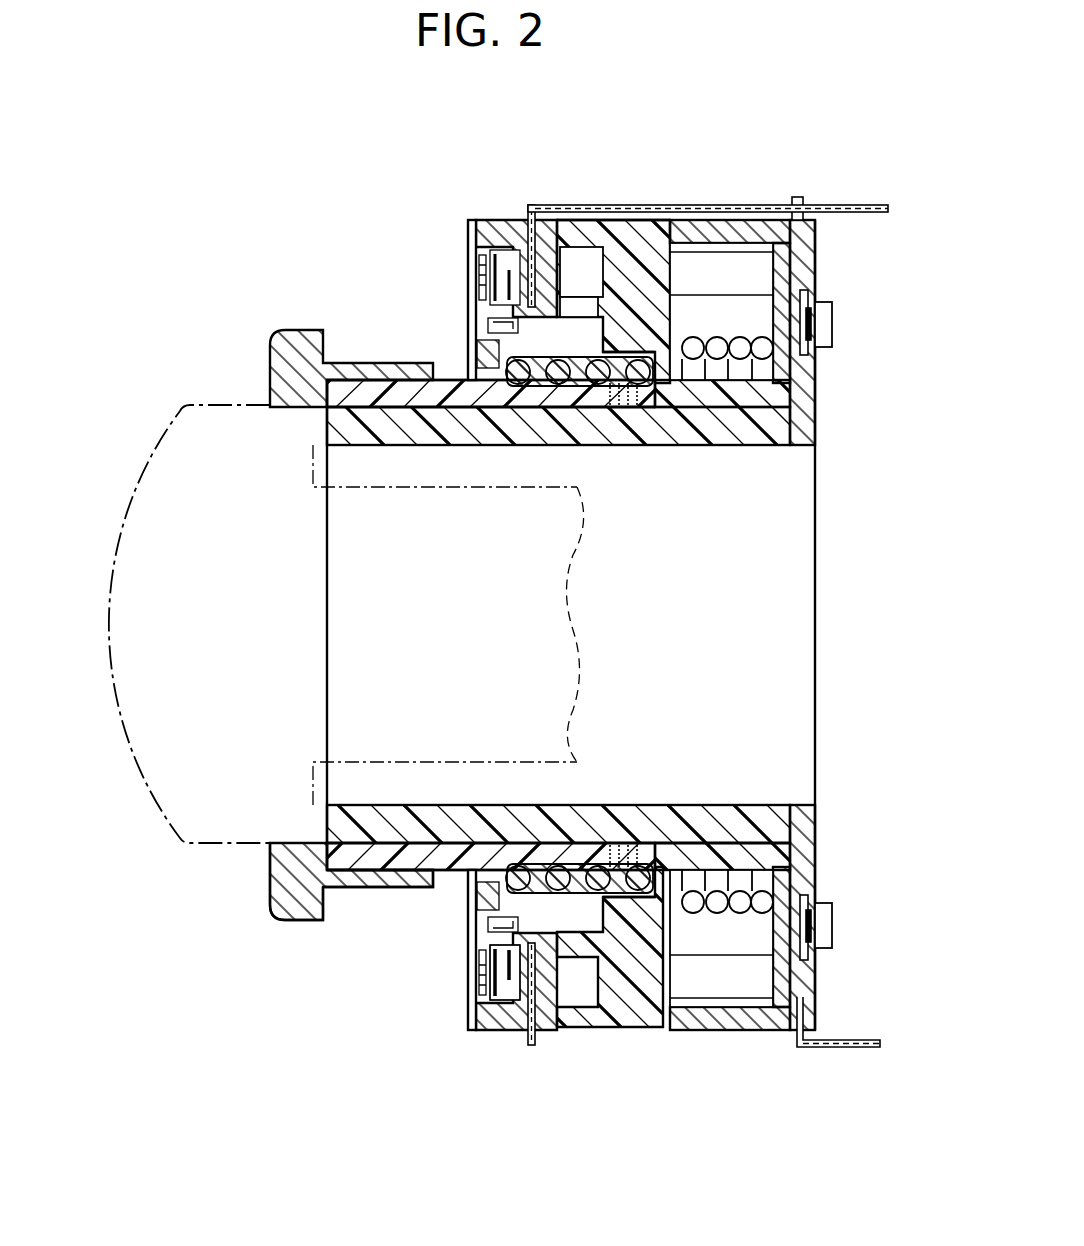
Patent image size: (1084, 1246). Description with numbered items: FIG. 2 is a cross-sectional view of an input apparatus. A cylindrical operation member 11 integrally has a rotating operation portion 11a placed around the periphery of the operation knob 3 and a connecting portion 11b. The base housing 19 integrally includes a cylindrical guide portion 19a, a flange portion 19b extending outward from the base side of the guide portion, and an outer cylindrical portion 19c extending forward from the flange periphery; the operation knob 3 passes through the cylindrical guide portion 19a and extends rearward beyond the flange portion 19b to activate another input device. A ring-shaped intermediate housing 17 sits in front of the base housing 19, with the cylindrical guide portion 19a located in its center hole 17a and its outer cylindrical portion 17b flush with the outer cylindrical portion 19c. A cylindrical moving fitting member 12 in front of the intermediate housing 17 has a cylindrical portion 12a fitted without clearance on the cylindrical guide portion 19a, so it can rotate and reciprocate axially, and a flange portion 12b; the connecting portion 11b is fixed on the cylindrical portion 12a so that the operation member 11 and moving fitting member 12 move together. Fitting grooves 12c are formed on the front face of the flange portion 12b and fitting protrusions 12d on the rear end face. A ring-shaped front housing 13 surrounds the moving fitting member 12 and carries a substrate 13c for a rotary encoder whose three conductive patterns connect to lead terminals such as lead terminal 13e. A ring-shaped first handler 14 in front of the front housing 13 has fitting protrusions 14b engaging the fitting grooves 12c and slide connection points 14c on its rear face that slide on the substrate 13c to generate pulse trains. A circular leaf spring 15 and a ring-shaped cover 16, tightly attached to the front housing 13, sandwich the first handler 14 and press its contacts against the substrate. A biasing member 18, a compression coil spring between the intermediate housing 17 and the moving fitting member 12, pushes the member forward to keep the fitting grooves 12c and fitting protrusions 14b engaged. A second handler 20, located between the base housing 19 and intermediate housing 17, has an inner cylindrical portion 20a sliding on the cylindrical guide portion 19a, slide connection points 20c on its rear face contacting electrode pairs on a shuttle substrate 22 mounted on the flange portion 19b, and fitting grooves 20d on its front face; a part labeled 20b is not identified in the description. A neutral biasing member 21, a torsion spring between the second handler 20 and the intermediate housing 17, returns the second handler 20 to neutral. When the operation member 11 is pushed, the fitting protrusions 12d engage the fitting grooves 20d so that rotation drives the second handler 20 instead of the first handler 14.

The operation knob 3 is at (143, 470).
The operation member 11 is at (292, 930).
The rotating operation portion 11a is at (278, 893).
The connecting portion 11b is at (348, 880).
The moving fitting member 12 is at (424, 852).
The cylindrical portion 12a is at (377, 856).
The flange portion 12b is at (492, 346).
The fitting grooves 12c is at (497, 408).
The fitting protrusions 12d is at (579, 490).
The front housing 13 is at (497, 222).
The substrate 13c is at (531, 300).
The lead terminal 13e is at (573, 207).
The first handler 14 is at (500, 1022).
The fitting protrusions 14b is at (490, 333).
The slide connection points 14c is at (493, 284).
The leaf spring 15 is at (480, 263).
The cover 16 is at (470, 235).
The intermediate housing 17 is at (637, 240).
The center hole 17a is at (668, 840).
The outer cylindrical portion 17b is at (591, 225).
The biasing member 18 is at (549, 387).
The base housing 19 is at (780, 804).
The cylindrical guide portion 19a is at (702, 425).
The flange portion 19b is at (805, 250).
The outer cylindrical portion 19c is at (760, 1032).
The second handler 20 is at (785, 851).
The cylindrical portion 20a is at (735, 848).
The coil bobbin 20b is at (738, 275).
The slide connection points 20c is at (810, 305).
The fitting grooves 20d is at (621, 410).
The neutral biasing member 21 is at (706, 330).
The shuttle substrate 22 is at (816, 325).